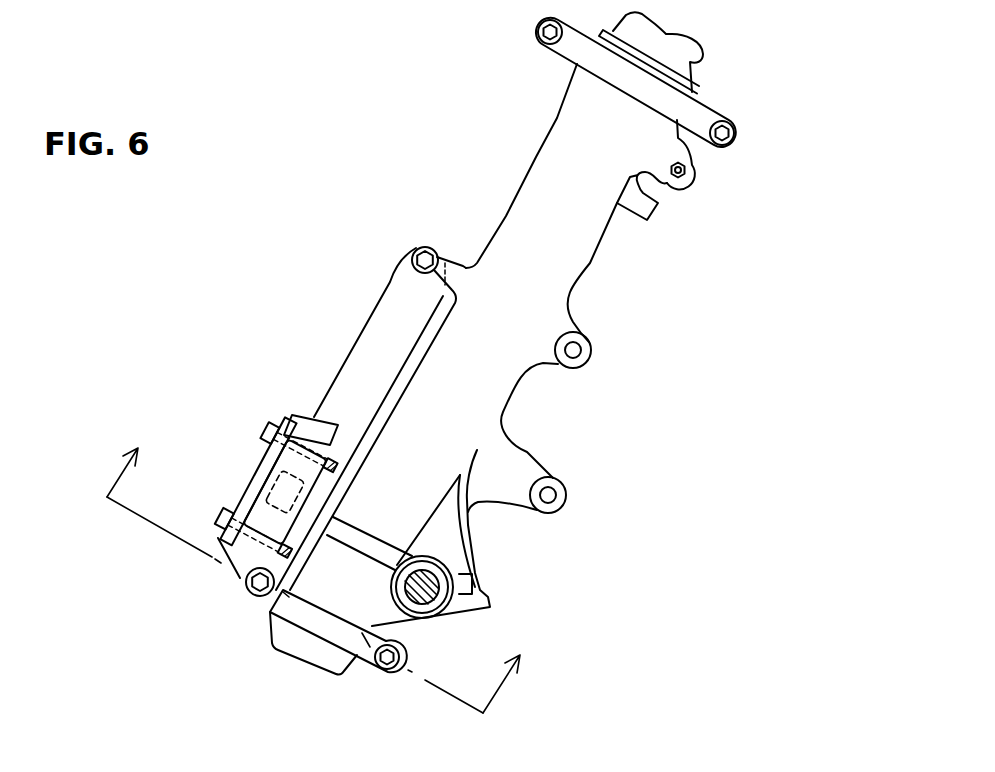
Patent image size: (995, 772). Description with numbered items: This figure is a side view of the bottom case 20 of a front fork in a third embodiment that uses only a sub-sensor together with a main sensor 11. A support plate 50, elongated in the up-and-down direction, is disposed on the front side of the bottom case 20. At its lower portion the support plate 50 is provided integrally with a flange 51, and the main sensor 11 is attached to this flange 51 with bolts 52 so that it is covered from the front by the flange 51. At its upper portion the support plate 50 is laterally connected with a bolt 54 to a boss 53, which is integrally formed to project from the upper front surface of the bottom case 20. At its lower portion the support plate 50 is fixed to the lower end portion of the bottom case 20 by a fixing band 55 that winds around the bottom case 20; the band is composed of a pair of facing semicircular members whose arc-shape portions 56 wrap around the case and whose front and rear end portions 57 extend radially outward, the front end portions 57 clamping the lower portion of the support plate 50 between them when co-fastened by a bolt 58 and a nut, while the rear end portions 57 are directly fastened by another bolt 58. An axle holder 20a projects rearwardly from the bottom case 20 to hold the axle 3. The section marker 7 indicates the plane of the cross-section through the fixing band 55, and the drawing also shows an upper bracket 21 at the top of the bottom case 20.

The axle 3 is at (437, 577).
The section line 7- 7 is at (325, 562).
The main sensor 11 is at (283, 494).
The bottom case 20 is at (577, 263).
The axle holder 20a is at (478, 543).
The upper support bracket 21 is at (700, 64).
The support plate 50 is at (400, 310).
The flange 51 is at (262, 460).
The bolts 52 is at (274, 422).
The boss 53 is at (467, 268).
The bolt 54 is at (413, 248).
The fixing band 55 is at (325, 618).
The arc-shape portions 56 is at (272, 640).
The front and rear end portions 57 is at (250, 620).
The bolt 58 is at (243, 580).